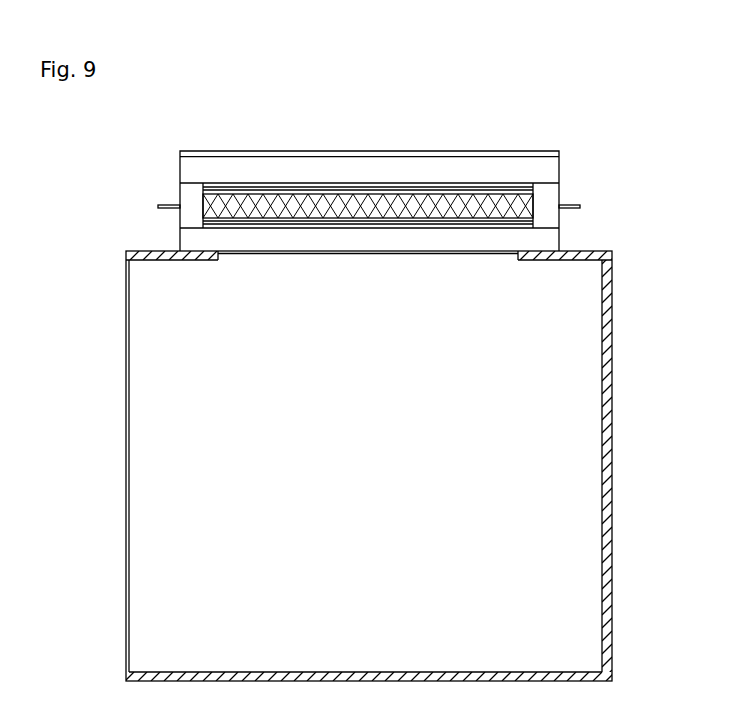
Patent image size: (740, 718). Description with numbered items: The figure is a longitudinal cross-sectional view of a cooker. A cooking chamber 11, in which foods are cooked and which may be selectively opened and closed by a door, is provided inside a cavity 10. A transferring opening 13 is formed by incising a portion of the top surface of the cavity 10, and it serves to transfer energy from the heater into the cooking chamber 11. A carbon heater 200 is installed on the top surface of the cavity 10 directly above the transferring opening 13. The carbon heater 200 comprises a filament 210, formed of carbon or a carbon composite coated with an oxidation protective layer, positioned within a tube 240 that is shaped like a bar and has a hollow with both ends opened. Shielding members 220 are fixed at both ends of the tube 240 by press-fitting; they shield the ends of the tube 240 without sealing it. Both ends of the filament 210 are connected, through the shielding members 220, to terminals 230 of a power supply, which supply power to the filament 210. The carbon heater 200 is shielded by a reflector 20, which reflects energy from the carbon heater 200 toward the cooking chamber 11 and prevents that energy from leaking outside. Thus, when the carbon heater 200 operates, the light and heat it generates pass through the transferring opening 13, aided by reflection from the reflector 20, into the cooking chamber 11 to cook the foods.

The cavity 10 is at (612, 381).
The cooking chamber 11 is at (159, 475).
The transferring opening 13 is at (392, 253).
The reflector 20 is at (245, 152).
The carbon heater 200 is at (384, 168).
The filament 210 is at (317, 194).
The shielding member 220 is at (545, 190).
The terminal 230 is at (575, 205).
The tube 240 is at (490, 187).